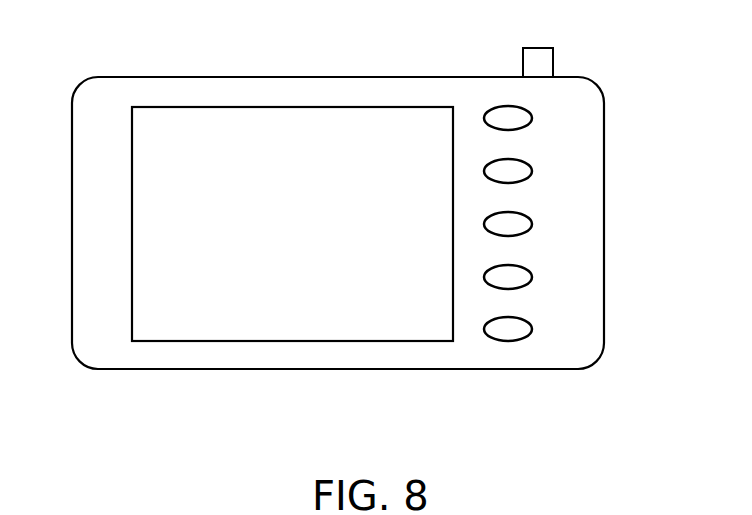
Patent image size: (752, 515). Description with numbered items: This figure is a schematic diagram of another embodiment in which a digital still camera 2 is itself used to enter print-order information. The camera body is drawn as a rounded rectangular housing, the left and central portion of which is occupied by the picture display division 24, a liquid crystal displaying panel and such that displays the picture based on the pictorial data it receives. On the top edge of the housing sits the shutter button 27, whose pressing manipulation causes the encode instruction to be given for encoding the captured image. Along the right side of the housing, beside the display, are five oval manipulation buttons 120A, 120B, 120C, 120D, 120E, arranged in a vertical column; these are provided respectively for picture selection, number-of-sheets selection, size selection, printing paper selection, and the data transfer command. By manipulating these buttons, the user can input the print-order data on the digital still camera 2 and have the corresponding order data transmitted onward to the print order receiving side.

The digital still camera 2 is at (80, 316).
The picture display division 24 is at (279, 125).
The shutter button 27 is at (541, 48).
The manipulation button 120A is at (532, 119).
The manipulation button 120B is at (532, 172).
The manipulation button 120C is at (532, 225).
The manipulation button 120D is at (532, 278).
The manipulation button 120E is at (532, 330).